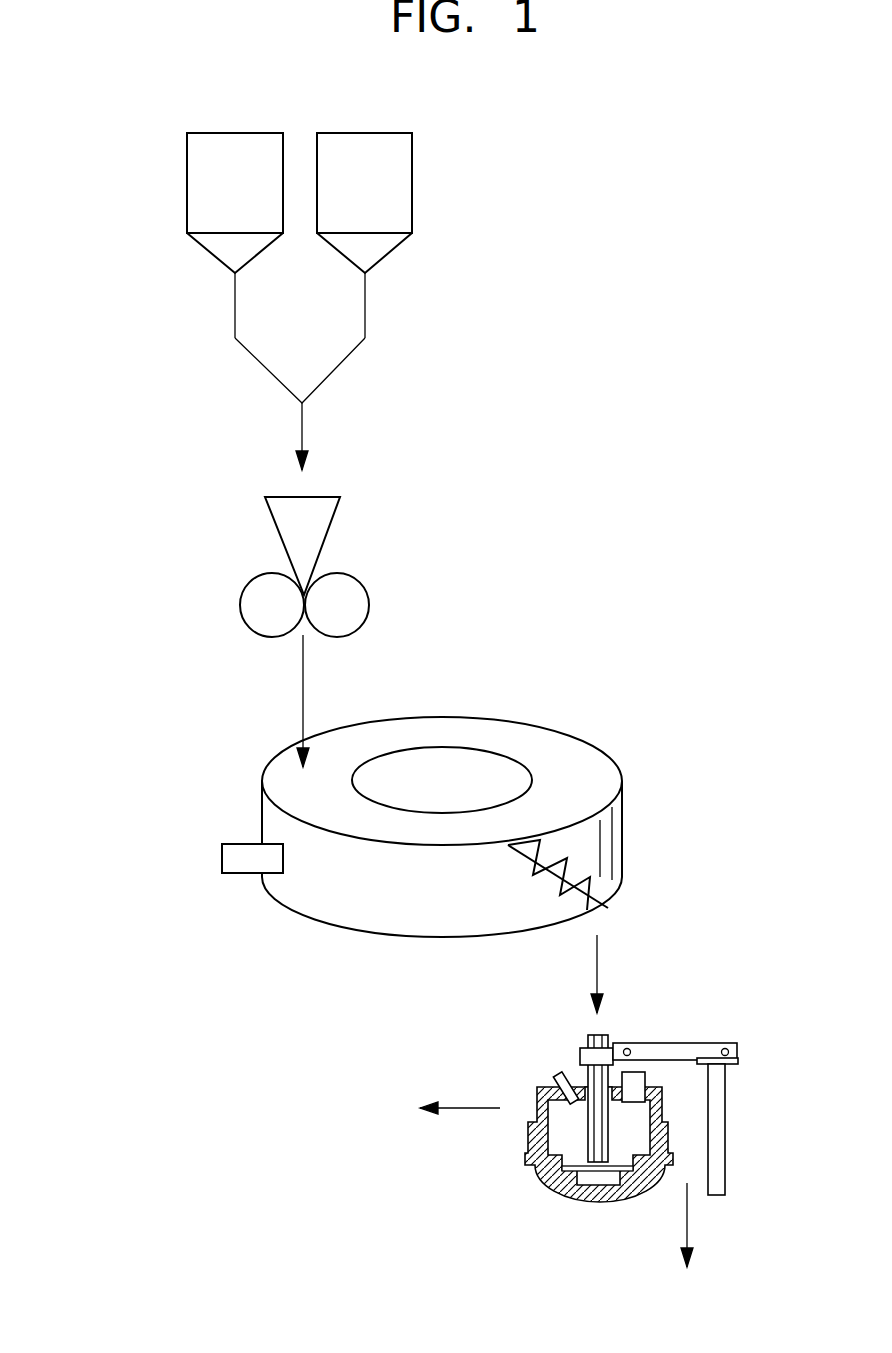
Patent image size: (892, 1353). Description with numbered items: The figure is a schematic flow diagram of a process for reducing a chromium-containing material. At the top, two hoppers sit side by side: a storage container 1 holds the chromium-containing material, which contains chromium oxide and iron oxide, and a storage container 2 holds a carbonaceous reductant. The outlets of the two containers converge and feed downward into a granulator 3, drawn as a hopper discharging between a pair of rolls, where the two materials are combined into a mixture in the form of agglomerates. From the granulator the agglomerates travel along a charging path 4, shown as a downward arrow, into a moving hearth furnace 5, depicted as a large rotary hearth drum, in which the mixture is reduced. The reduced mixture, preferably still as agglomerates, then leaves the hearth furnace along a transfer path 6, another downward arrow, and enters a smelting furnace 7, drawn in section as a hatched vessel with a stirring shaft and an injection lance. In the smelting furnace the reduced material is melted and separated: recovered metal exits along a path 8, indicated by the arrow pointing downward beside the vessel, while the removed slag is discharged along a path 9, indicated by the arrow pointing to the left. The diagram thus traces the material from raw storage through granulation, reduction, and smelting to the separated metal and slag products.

The storage container for chromium-containing material 1 is at (208, 178).
The storage container for carbonaceous reductant 2 is at (392, 175).
The granulator 3 is at (352, 574).
The charging path 4 is at (304, 677).
The moving hearth furnace 5 is at (553, 725).
The transfer path 6 is at (597, 962).
The smelting furnace 7 is at (550, 1086).
The path for recovered metal 8 is at (687, 1244).
The path for removed slag 9 is at (445, 1110).